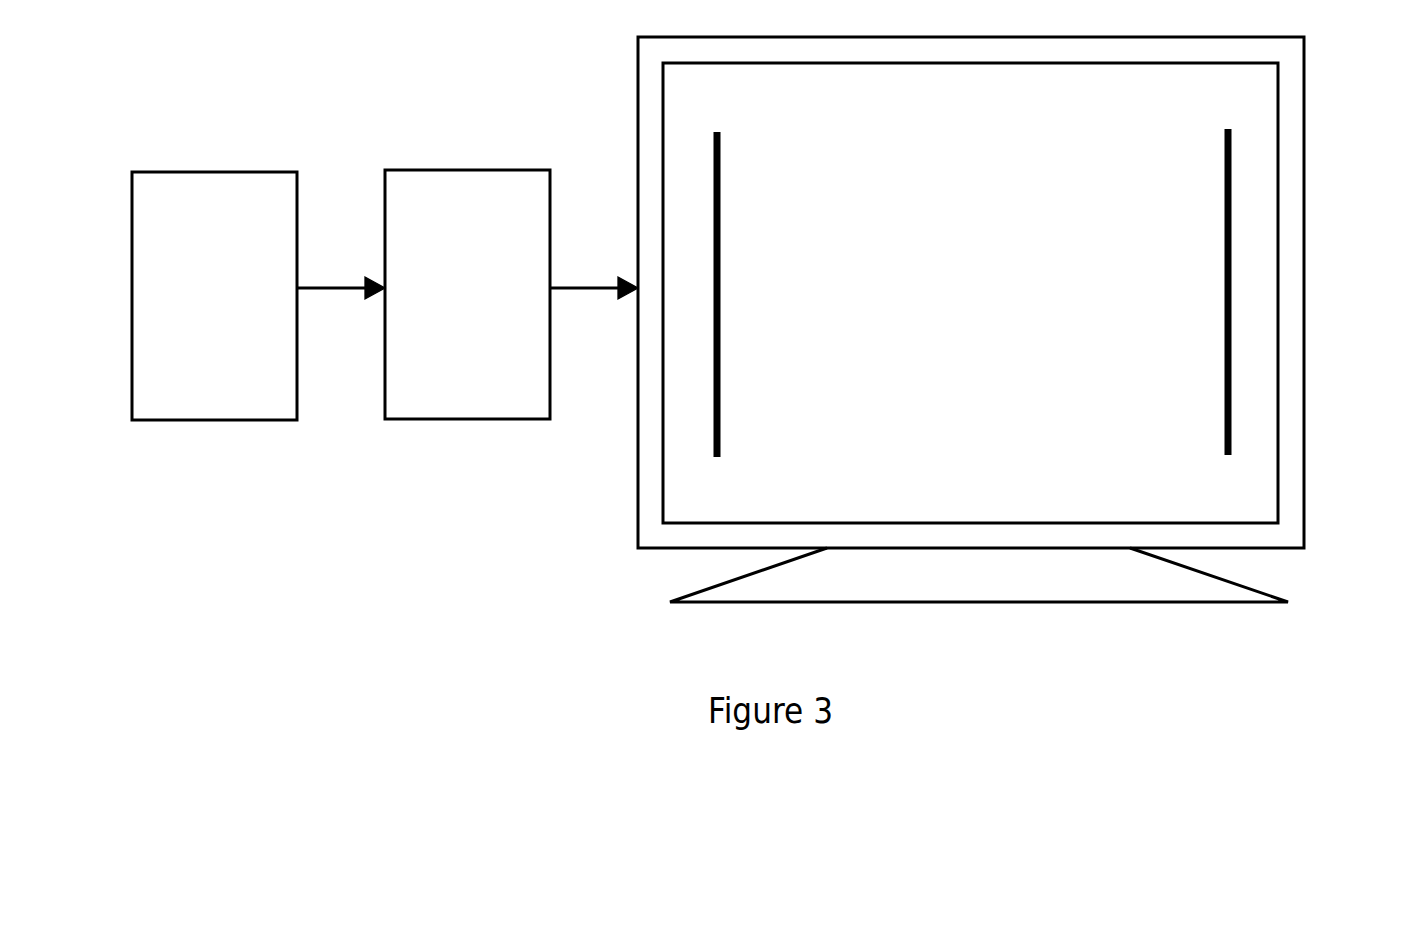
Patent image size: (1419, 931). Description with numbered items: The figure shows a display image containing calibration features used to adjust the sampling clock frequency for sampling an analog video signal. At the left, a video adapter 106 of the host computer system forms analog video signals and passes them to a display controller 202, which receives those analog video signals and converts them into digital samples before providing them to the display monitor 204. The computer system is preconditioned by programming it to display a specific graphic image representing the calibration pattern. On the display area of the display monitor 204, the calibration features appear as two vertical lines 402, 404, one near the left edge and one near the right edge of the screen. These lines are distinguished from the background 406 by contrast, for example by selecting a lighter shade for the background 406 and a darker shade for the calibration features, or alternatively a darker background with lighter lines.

The video adapter 106 is at (255, 393).
The display controller 202 is at (526, 393).
The display monitor 204 is at (1306, 82).
The vertical line 402 is at (721, 148).
The vertical line 404 is at (1222, 211).
The background 406 is at (1135, 467).